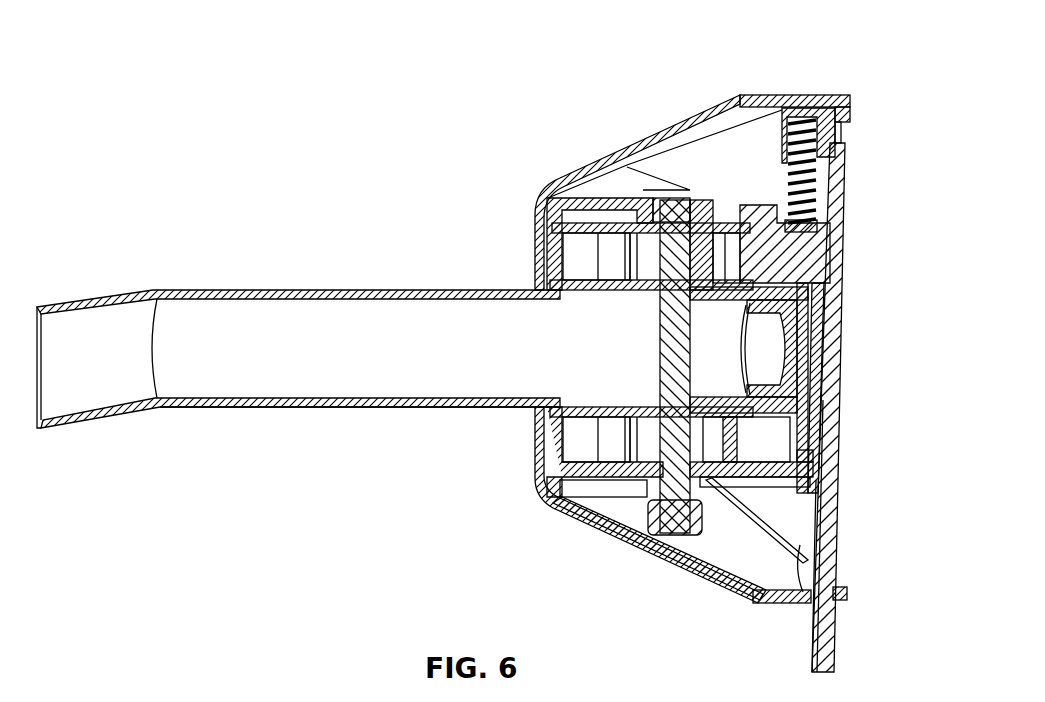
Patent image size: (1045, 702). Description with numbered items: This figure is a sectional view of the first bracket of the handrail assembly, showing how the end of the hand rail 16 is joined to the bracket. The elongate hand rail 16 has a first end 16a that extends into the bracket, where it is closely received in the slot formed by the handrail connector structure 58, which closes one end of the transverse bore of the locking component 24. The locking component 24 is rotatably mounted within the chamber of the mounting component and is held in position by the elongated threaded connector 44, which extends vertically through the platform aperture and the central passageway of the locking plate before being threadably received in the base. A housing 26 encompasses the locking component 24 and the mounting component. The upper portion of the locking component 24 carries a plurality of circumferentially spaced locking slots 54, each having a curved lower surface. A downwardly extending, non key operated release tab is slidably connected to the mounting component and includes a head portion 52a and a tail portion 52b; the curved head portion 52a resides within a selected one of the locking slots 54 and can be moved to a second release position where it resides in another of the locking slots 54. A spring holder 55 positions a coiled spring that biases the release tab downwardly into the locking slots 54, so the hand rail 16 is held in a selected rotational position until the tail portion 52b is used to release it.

The hand rail 16 is at (113, 285).
The first end 16a is at (452, 409).
The locking component 24 is at (532, 246).
The housing 26 is at (738, 100).
The threaded connector 44 is at (672, 347).
The head portion 52a is at (768, 258).
The tail portion 52b is at (833, 646).
The locking slots 54 is at (583, 264).
The spring holder 55 is at (836, 175).
The handrail connector structure 58 is at (795, 305).